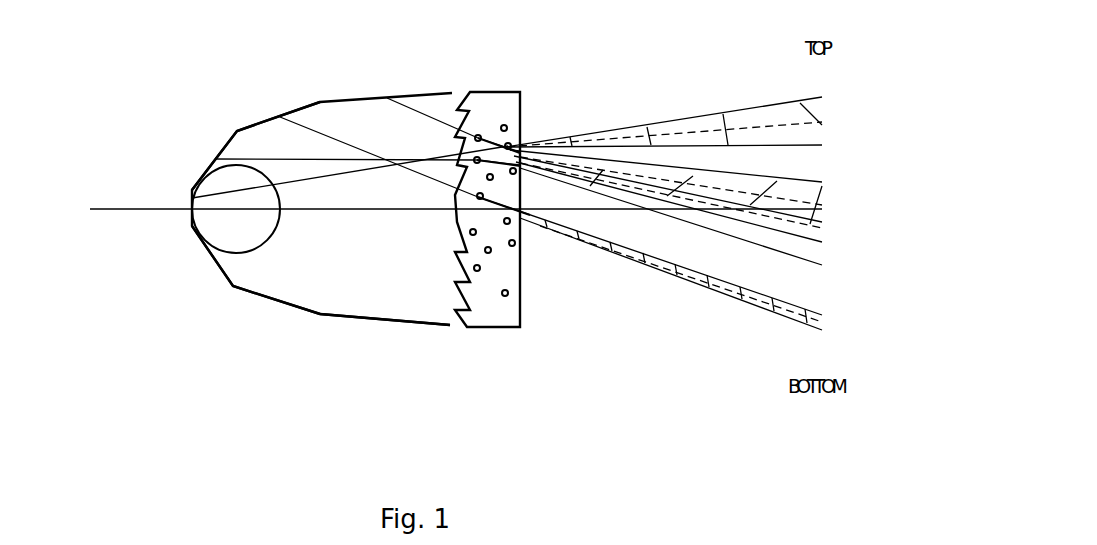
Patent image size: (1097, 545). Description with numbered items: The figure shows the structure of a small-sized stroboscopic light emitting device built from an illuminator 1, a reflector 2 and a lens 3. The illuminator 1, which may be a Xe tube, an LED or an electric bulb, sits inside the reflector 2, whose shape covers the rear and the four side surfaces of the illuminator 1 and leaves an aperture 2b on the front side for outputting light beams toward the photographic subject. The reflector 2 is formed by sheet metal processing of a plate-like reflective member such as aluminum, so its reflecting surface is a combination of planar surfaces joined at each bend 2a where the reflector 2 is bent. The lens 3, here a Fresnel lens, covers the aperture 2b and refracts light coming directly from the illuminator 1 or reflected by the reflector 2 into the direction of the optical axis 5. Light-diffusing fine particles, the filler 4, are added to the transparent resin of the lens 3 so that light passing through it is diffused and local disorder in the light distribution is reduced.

The illuminator 1 is at (220, 232).
The reflector 2 is at (277, 302).
The bend 2a is at (234, 116).
The aperture 2b is at (437, 245).
The lens 3 is at (502, 320).
The filler 4 is at (516, 244).
The optical axis 5 is at (100, 210).